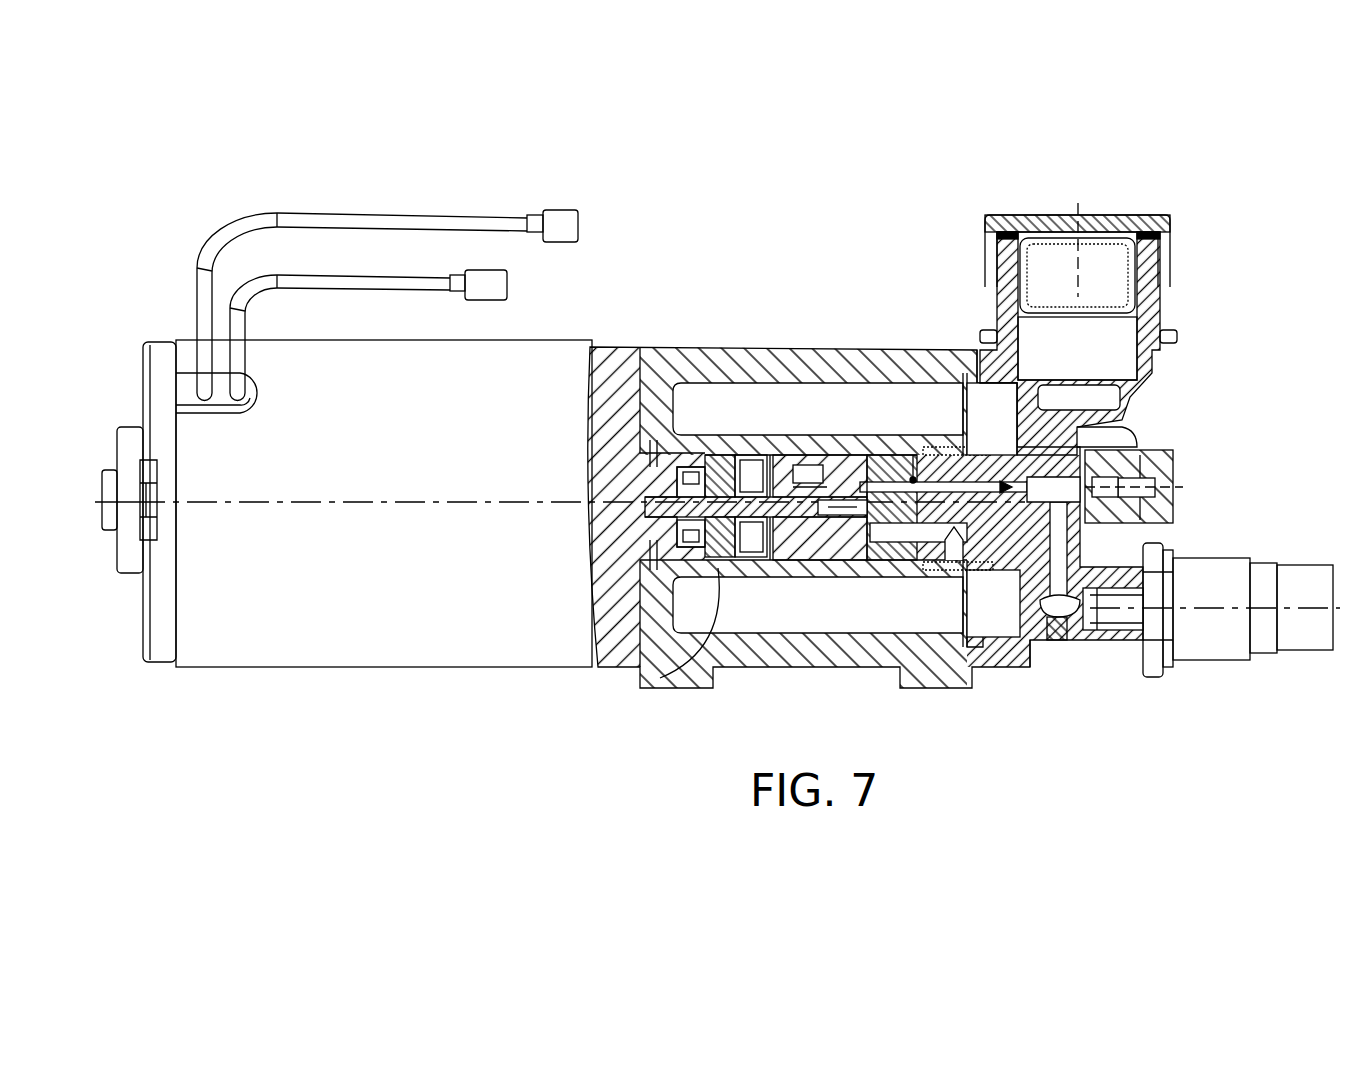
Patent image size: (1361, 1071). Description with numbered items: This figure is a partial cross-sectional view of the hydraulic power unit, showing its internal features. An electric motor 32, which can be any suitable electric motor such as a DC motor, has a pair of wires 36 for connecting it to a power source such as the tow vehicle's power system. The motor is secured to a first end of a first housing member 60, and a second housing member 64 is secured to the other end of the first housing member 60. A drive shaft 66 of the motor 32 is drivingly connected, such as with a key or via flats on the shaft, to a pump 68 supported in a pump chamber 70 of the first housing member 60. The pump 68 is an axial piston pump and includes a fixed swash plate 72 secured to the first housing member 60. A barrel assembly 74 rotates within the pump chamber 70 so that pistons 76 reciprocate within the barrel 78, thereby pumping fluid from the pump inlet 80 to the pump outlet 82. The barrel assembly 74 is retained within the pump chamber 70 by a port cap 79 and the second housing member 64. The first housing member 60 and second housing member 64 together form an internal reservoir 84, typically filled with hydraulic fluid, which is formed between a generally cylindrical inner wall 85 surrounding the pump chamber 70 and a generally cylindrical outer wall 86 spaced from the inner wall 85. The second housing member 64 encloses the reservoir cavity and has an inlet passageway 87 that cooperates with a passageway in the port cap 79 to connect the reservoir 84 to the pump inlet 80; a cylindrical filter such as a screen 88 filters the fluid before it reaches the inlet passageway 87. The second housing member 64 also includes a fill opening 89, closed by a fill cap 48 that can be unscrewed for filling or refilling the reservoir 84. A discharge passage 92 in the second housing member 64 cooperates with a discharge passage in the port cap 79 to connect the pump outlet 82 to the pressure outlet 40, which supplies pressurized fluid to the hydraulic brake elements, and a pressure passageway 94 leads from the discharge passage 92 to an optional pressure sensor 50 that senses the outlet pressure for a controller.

The electric motor 32 is at (337, 628).
The wires 36 is at (420, 217).
The pressure outlet 40 is at (1165, 497).
The fill cap 48 is at (1160, 215).
The pressure sensor 50 is at (1307, 566).
The first housing member 60 is at (812, 338).
The second housing member 64 is at (1203, 473).
The drive shaft 66 is at (820, 555).
The pump 68 is at (807, 555).
The pump chamber 70 is at (820, 557).
The swash plate 72 is at (700, 470).
The barrel assembly 74 is at (847, 460).
The pistons 76 is at (767, 460).
The barrel 78 is at (820, 476).
The port cap 79 is at (889, 466).
The pump inlet 80 is at (873, 555).
The pump outlet 82 is at (977, 450).
The internal reservoir 84 is at (777, 600).
The inner wall 85 is at (660, 678).
The outer wall 86 is at (847, 365).
The inlet passageway 87 is at (951, 562).
The screen 88 is at (978, 576).
The fill opening 89 is at (1097, 250).
The discharge passage 92 is at (1082, 440).
The pressure passageway 94 is at (1068, 562).